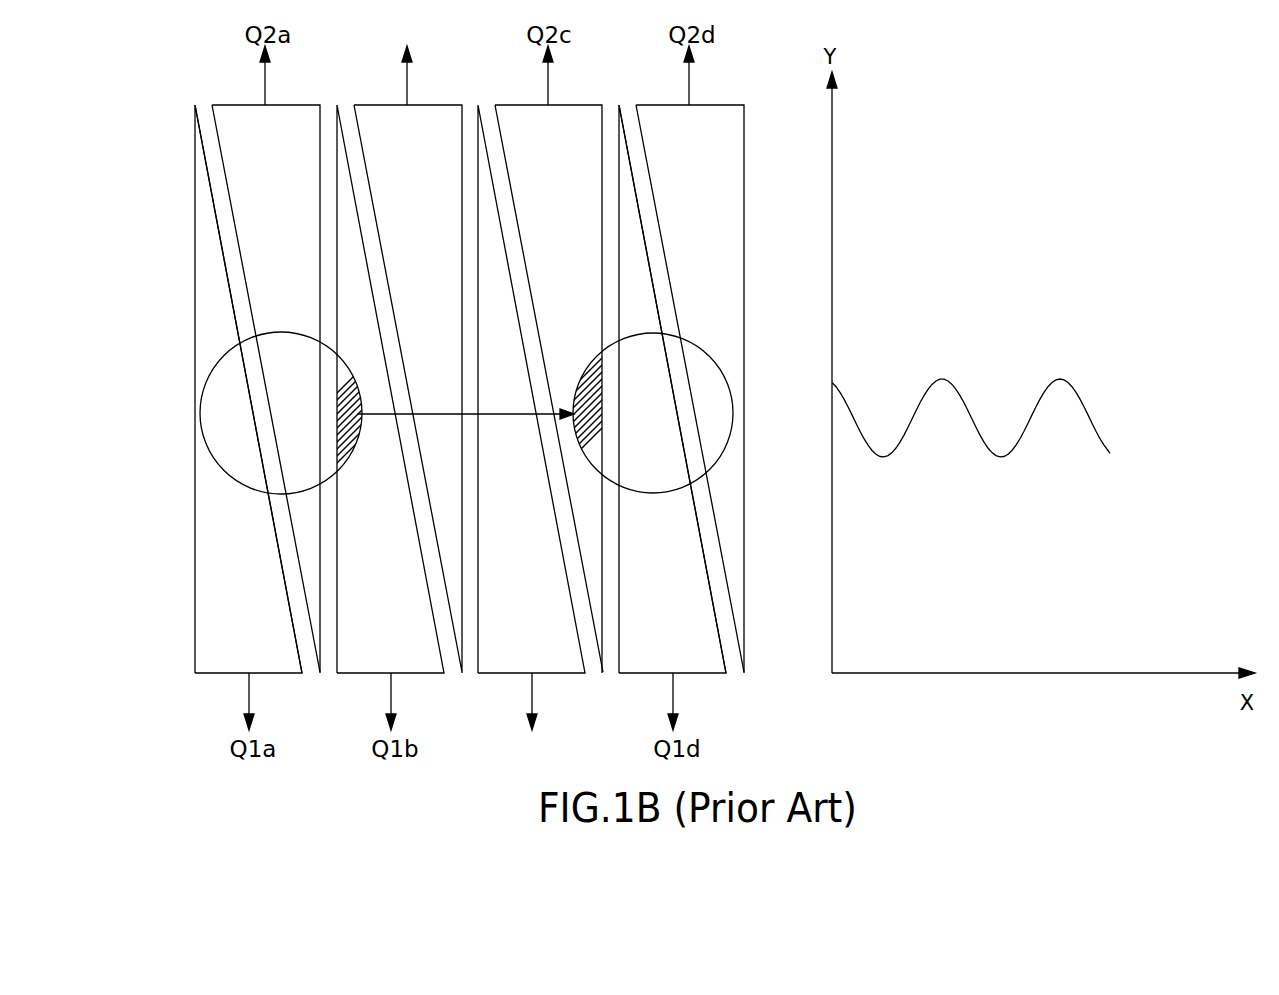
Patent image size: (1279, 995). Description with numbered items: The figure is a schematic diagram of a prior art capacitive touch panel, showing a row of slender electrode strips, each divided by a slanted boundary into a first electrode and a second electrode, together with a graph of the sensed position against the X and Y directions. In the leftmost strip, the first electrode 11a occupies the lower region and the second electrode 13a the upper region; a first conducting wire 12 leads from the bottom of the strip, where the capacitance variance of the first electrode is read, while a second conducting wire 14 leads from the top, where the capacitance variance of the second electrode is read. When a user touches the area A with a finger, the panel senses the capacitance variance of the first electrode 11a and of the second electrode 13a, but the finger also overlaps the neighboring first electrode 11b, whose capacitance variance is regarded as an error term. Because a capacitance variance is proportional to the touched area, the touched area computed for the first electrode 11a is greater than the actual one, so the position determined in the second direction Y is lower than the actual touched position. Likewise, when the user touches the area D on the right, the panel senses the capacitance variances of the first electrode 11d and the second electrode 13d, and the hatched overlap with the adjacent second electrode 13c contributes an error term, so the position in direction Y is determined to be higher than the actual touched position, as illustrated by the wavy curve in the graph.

The first electrode 11a is at (212, 630).
The first electrode 11b is at (363, 593).
The first electrode 11d is at (675, 556).
The first conducting wire 12 is at (249, 697).
The second electrode 13a is at (277, 279).
The second electrode 13c is at (570, 222).
The second electrode 13d is at (725, 257).
The second conducting wire 14 is at (265, 84).
The area A is at (201, 392).
The area D is at (733, 395).